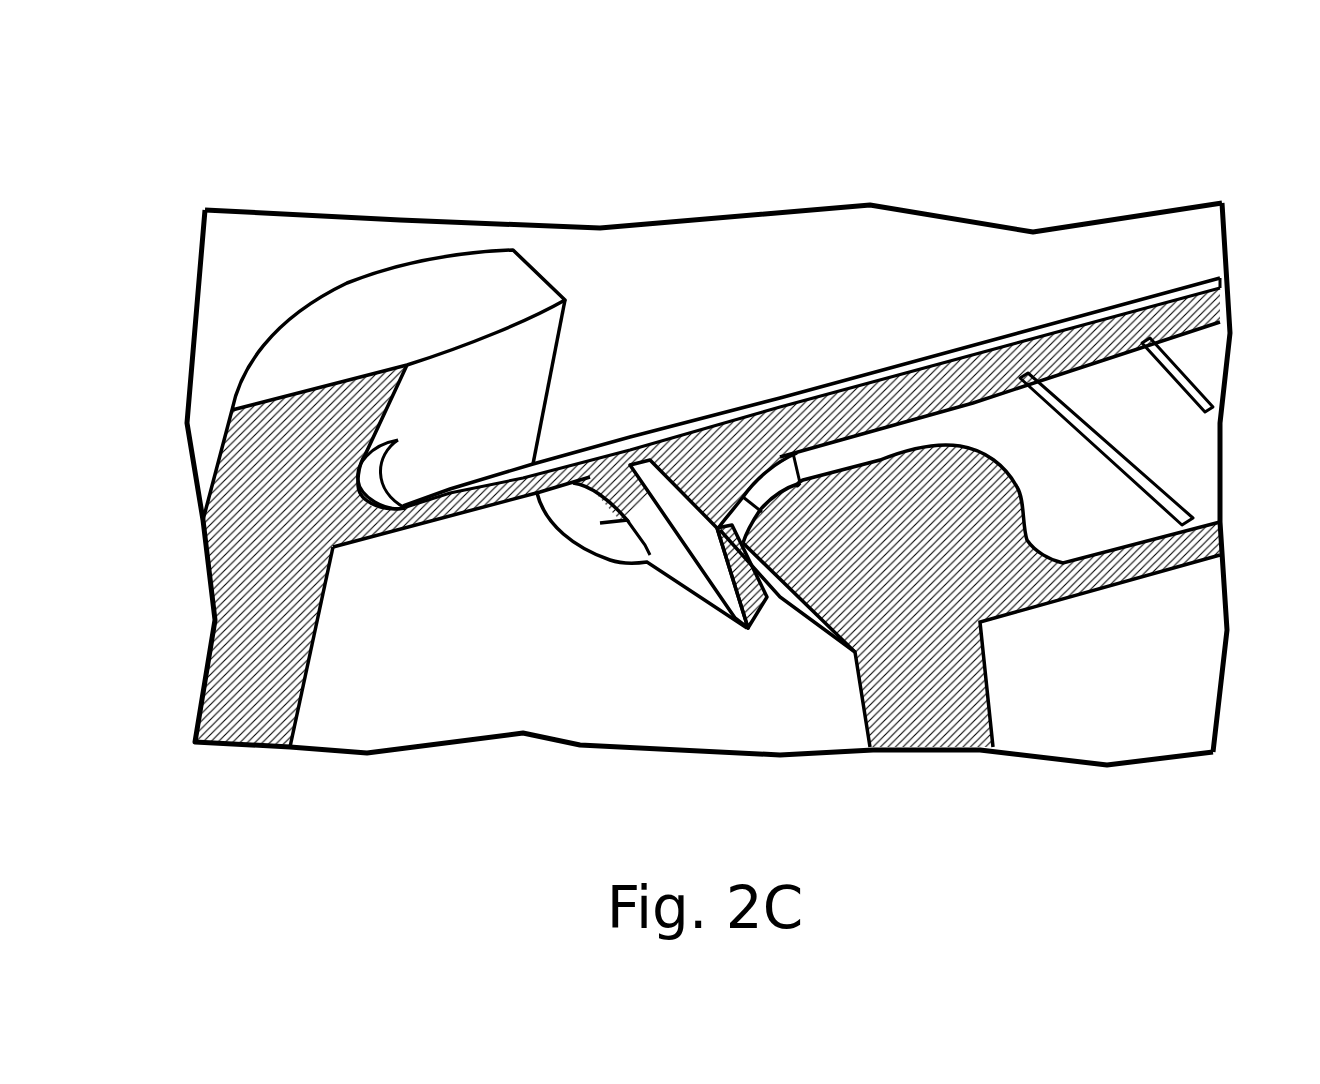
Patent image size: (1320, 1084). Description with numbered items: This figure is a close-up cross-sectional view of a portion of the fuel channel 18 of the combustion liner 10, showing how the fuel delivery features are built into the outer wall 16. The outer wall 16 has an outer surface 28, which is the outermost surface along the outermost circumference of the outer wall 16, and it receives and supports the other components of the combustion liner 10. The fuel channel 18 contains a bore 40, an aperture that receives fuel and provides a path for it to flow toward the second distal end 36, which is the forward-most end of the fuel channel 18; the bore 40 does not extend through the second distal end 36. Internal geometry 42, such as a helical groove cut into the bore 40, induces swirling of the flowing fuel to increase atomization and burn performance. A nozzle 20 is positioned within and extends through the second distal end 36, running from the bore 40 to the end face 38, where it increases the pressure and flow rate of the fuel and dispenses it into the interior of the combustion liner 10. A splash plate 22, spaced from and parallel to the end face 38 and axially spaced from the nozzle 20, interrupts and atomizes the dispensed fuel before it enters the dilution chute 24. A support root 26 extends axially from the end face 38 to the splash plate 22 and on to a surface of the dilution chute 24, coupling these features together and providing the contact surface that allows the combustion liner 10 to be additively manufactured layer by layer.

The combustion liner 10 is at (696, 409).
The outer wall 16 is at (607, 263).
The fuel channel 18 is at (1203, 257).
The nozzle 20 is at (730, 530).
The splash plate 22 is at (697, 592).
The dilution chute 24 is at (312, 380).
The support root 26 is at (472, 502).
The outer surface 28 is at (830, 282).
The second distal end 36 is at (710, 458).
The end face 38 is at (773, 590).
The bore 40 is at (1192, 460).
The internal geometry 42 is at (1082, 420).